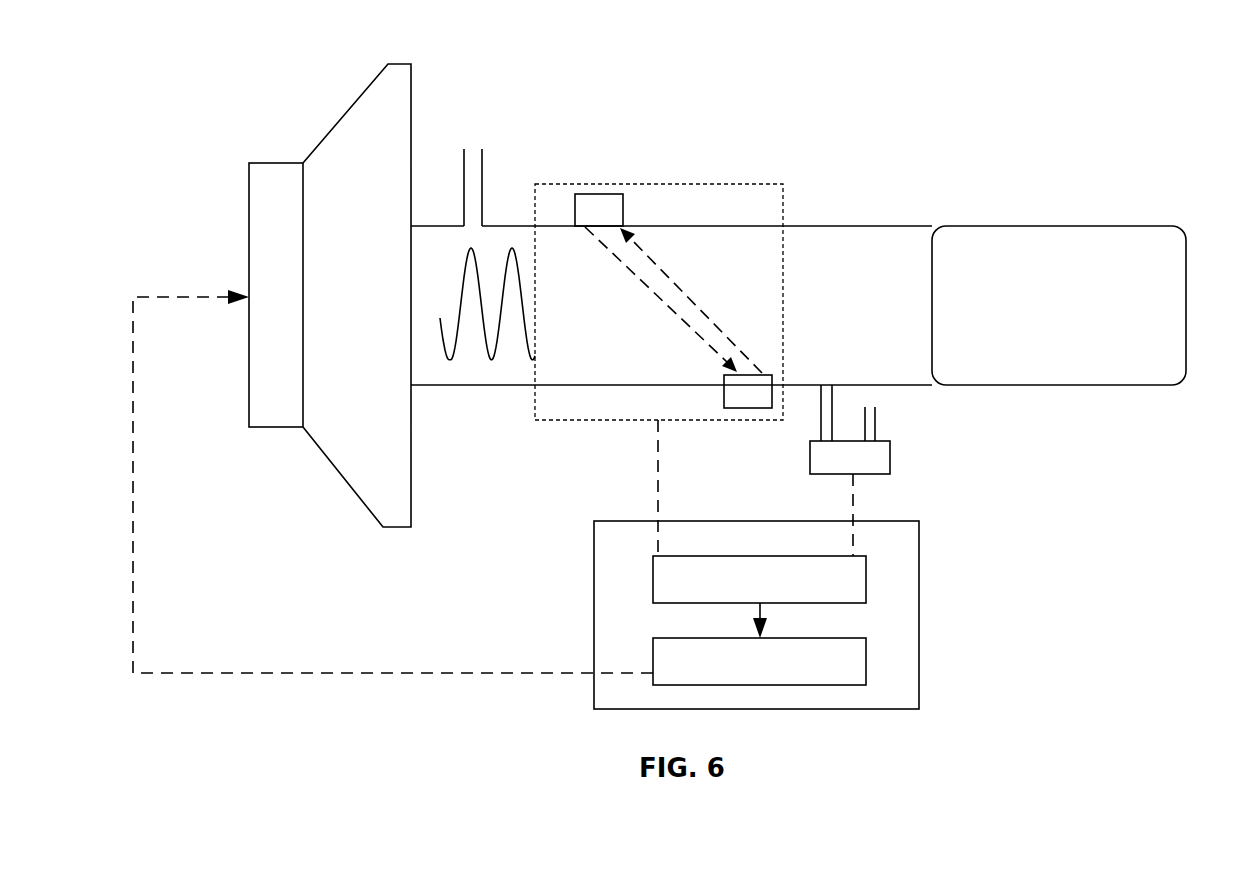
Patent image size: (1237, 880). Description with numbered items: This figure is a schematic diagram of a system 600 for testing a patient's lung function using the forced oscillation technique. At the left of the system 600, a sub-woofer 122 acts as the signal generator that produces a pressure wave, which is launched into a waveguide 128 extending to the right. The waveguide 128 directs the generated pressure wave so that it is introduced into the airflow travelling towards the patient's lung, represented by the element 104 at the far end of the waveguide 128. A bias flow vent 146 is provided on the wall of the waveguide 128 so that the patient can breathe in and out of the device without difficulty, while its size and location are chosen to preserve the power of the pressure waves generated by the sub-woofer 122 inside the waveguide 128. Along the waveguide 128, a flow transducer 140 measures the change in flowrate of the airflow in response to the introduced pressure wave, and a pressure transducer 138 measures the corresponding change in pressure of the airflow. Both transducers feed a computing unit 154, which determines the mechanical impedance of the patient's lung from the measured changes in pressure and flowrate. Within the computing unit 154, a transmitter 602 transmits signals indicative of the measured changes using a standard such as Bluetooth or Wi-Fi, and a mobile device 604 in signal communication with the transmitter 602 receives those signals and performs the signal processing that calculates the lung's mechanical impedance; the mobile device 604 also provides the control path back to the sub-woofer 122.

The system 600 is at (1088, 128).
The sub-woofer 122 is at (330, 143).
The bias flow vent 146 is at (477, 155).
The flow transducer 140 is at (783, 195).
The waveguide 128 is at (834, 316).
The tank 104 is at (1036, 322).
The pressure transducer 138 is at (890, 450).
The computing unit 154 is at (920, 628).
The transmitter 602 is at (736, 594).
The mobile device 604 is at (736, 676).